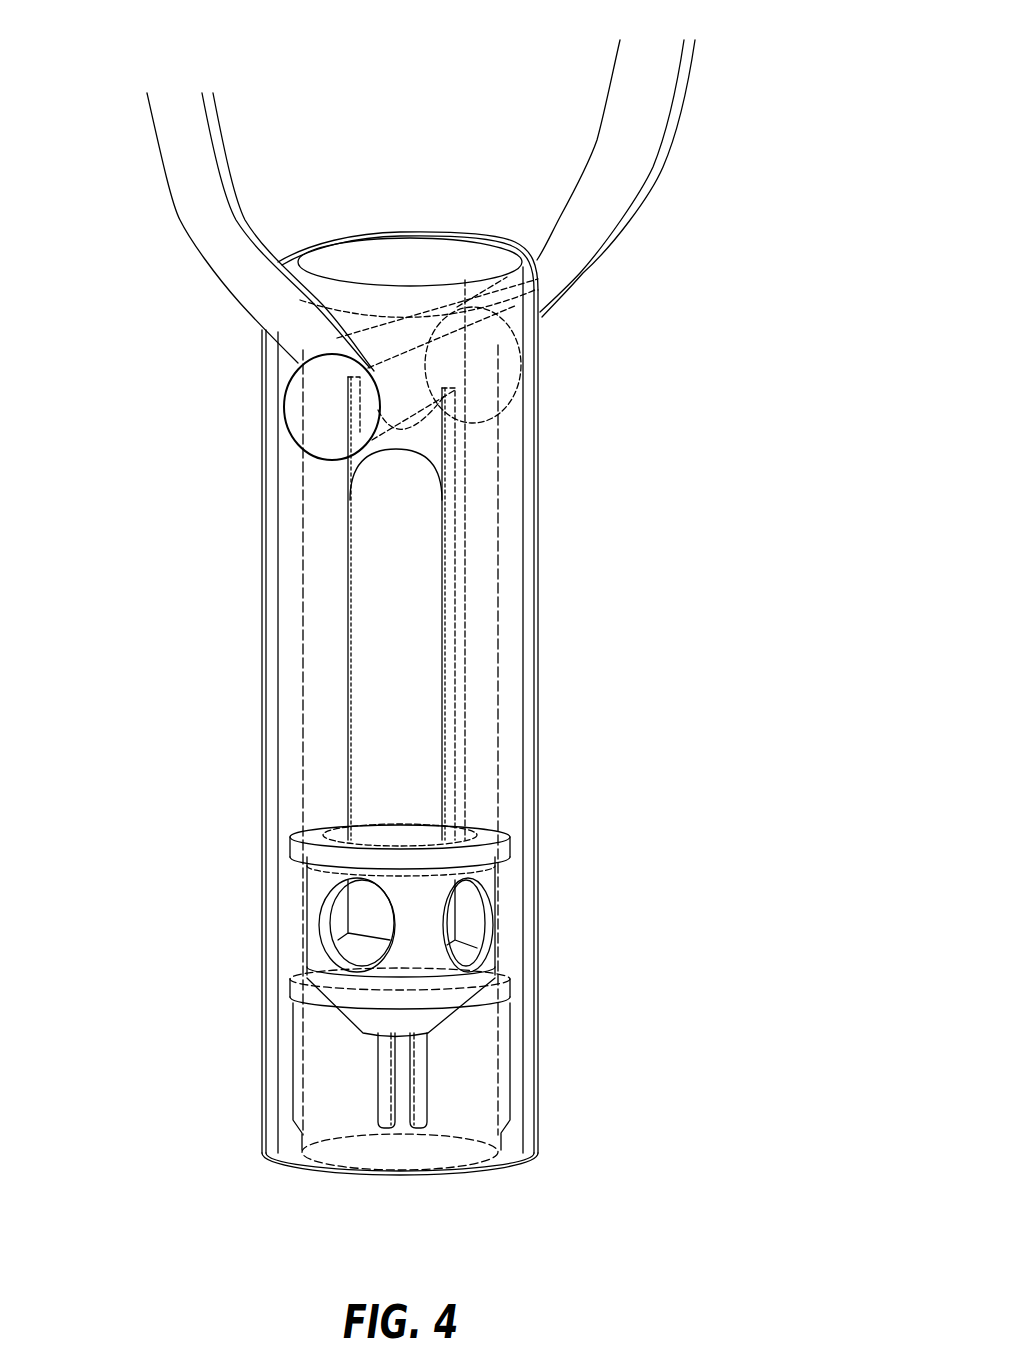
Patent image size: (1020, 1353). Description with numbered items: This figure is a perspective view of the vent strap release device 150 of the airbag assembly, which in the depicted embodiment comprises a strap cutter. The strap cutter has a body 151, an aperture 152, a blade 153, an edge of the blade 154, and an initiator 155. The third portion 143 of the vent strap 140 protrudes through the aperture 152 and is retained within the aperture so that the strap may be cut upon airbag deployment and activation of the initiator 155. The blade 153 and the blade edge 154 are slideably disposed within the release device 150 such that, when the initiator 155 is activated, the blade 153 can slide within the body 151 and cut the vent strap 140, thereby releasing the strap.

The vent strap 140 is at (392, 191).
The third portion of vent strap 143 is at (213, 243).
The vent strap release device 150 is at (676, 232).
The body 151 is at (387, 247).
The aperture 152 is at (325, 412).
The blade 153 is at (403, 636).
The edge of the blade 154 is at (430, 478).
The initiator 155 is at (437, 1062).